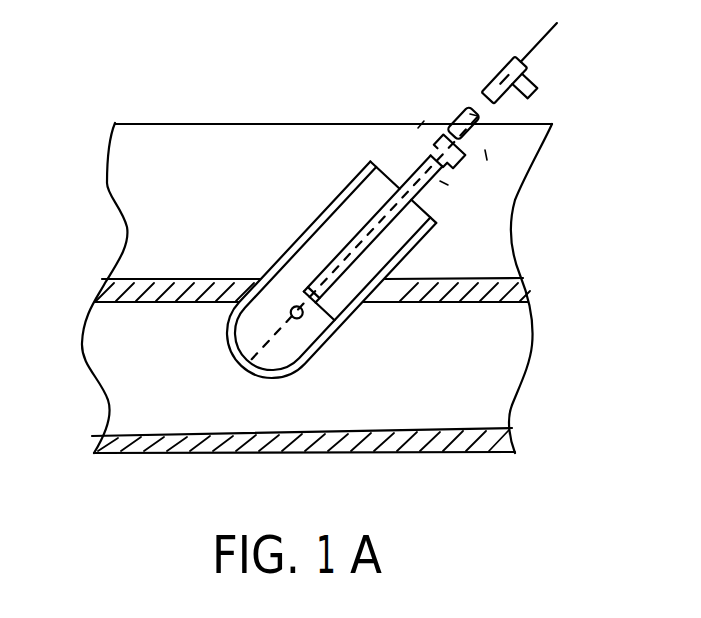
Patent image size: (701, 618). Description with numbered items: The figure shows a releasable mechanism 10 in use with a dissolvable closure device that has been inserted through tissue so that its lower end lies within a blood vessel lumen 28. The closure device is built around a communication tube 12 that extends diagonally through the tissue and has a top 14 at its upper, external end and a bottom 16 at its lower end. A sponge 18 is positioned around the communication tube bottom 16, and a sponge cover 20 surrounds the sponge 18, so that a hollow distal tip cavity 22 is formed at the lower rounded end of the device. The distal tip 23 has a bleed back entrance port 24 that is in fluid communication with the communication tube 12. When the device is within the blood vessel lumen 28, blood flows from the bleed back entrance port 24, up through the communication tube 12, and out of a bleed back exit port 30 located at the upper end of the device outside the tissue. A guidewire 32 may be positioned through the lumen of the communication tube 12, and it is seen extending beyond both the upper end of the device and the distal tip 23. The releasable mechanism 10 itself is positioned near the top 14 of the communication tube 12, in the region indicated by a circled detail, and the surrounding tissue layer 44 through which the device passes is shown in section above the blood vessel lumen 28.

The releasable mechanism 10 is at (382, 223).
The communication tube 12 is at (381, 230).
The top 14 is at (422, 161).
The bottom 16 is at (305, 294).
The sponge 18 is at (351, 228).
The sponge cover 20 is at (311, 220).
The hollow distal tip cavity 22 is at (277, 353).
The distal tip 23 is at (266, 378).
The bleed back entrance port 24 is at (303, 313).
The blood vessel lumen 28 is at (472, 395).
The bleed back exit port 30 is at (540, 89).
The guidewire 32 is at (549, 38).
The skin layer 44 is at (264, 278).